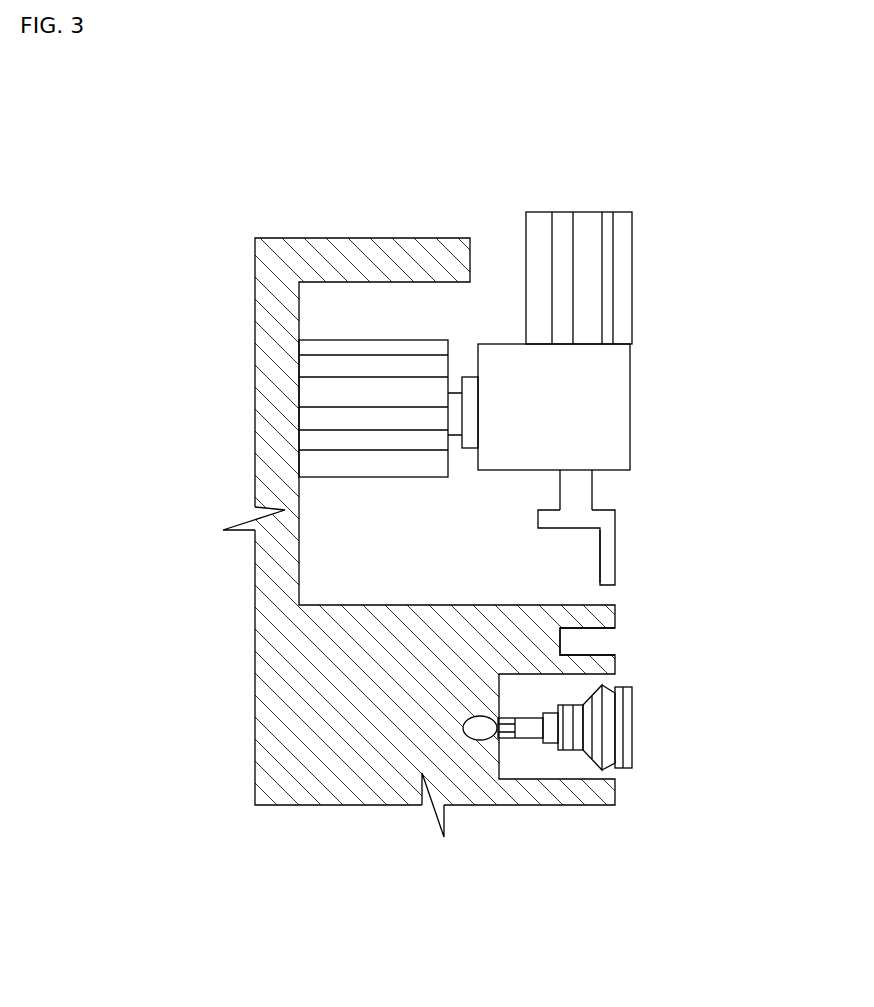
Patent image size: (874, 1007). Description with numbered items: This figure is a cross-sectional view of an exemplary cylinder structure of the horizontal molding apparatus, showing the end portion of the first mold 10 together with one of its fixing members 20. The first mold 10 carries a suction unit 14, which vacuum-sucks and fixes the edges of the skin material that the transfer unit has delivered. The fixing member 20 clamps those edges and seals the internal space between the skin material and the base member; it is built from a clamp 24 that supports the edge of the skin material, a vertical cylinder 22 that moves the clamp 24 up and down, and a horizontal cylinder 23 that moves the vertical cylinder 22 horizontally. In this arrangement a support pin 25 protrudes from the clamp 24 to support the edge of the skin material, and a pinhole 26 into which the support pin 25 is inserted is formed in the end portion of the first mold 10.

The first mold 10 is at (255, 740).
The suction unit 14 is at (632, 727).
The fixing member 20 is at (503, 232).
The vertical cylinder 22 is at (592, 490).
The horizontal cylinder 23 is at (453, 410).
The clamp 24 is at (615, 547).
The support pin 25 is at (600, 553).
The pinhole 26 is at (595, 655).